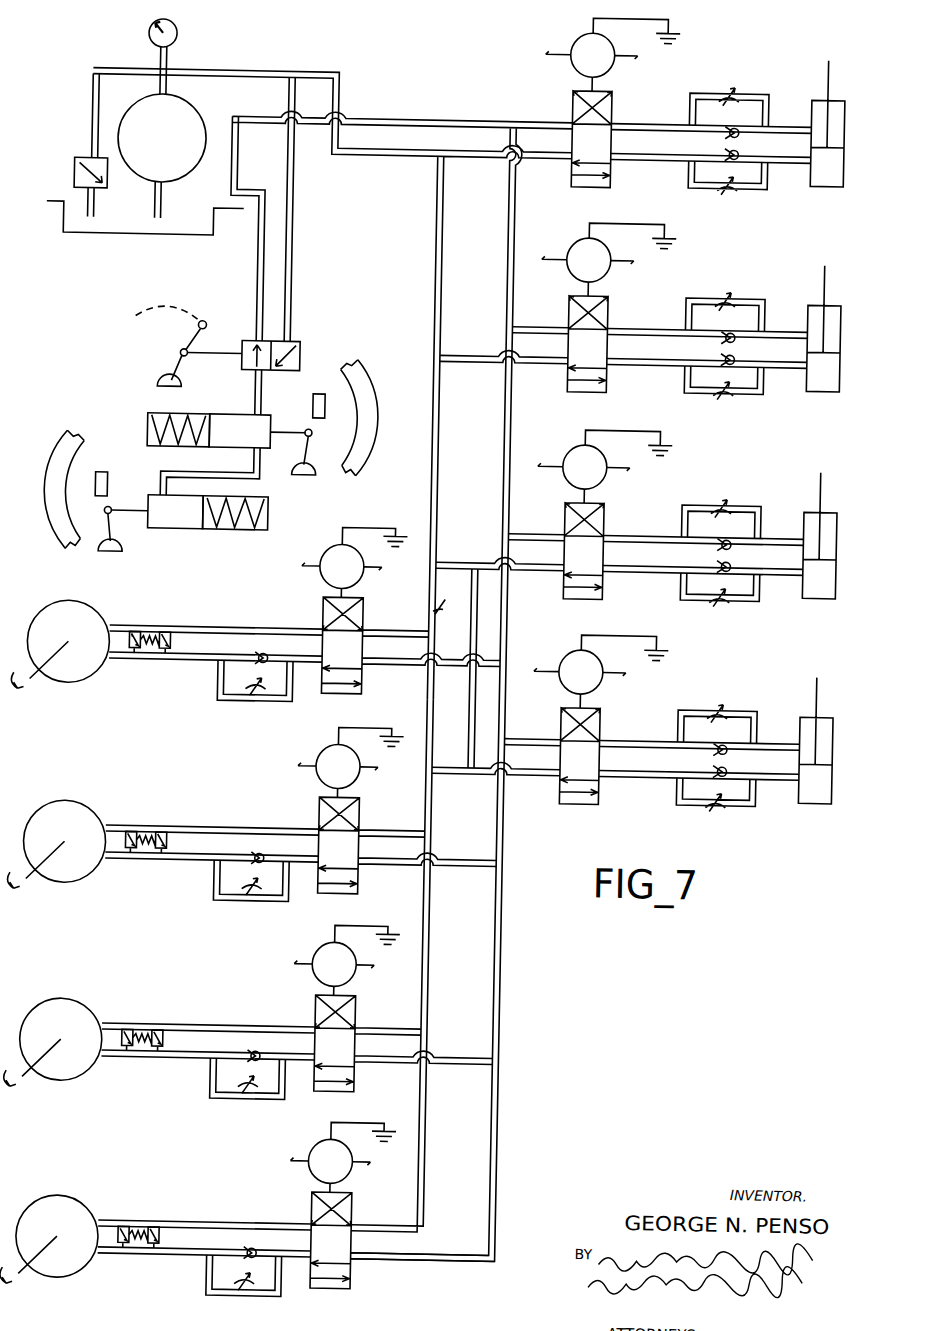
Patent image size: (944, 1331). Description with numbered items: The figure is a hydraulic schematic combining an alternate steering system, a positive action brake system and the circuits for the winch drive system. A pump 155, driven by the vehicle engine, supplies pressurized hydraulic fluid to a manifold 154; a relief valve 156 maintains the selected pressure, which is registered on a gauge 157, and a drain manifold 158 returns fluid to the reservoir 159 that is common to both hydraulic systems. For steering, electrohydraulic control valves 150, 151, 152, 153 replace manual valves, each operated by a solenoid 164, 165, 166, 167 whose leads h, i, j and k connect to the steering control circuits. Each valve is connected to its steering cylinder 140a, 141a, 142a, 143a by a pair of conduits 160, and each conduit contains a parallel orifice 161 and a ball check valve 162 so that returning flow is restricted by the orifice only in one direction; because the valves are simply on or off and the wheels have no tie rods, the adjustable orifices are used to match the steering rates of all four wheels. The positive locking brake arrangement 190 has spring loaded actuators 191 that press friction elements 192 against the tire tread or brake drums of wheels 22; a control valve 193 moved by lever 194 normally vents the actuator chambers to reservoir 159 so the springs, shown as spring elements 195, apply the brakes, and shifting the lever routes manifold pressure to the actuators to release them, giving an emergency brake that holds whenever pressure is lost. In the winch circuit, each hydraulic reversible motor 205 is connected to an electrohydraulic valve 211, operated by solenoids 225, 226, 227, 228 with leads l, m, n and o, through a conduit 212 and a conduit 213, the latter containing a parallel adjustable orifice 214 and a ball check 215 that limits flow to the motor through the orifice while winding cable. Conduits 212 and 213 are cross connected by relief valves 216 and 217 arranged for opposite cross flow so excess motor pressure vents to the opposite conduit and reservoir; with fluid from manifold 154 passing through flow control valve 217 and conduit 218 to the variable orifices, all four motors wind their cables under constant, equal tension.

The brake shoe 22 is at (360, 434).
The hydraulic cylinder 140a is at (834, 177).
The hydraulic cylinder 141a is at (834, 362).
The hydraulic cylinder 142a is at (834, 568).
The hydraulic cylinder 143a is at (834, 758).
The electrohydraulic control valve 150 is at (564, 98).
The electrohydraulic control valve 151 is at (562, 309).
The electrohydraulic control valve 152 is at (562, 519).
The electrohydraulic control valve 153 is at (560, 727).
The manifold 154 is at (432, 265).
The pump 155 is at (176, 105).
The relief valve 156 is at (65, 168).
The gauge 157 is at (165, 37).
The drain manifold 158 is at (444, 110).
The reservoir 159 is at (162, 245).
The conduits 160 is at (656, 149).
The parallel orifice 161 is at (750, 75).
The ball check valve 162 is at (729, 121).
The solenoid 164 is at (573, 30).
The solenoid 165 is at (570, 253).
The solenoid 166 is at (564, 453).
The solenoid 167 is at (572, 660).
The positive locking brake arrangement 190 is at (104, 389).
The spring loaded actuators 191 is at (156, 449).
The friction elements 192 is at (316, 394).
The control valve 193 is at (236, 369).
The lever 194 is at (179, 349).
The return spring 195 is at (143, 418).
The hydraulic reversible motor 205 is at (85, 678).
The electrohydraulic valve 211 is at (358, 684).
The conduit 212 is at (240, 633).
The conduit 213 is at (190, 671).
The adjustable orifice 214 is at (244, 705).
The ball check 215 is at (258, 660).
The relief valve 216 is at (132, 639).
The relief valve 217 is at (163, 639).
The conduit 218 is at (435, 942).
The solenoid 225 is at (333, 548).
The solenoid 226 is at (322, 752).
The solenoid 227 is at (320, 950).
The solenoid 228 is at (322, 1148).